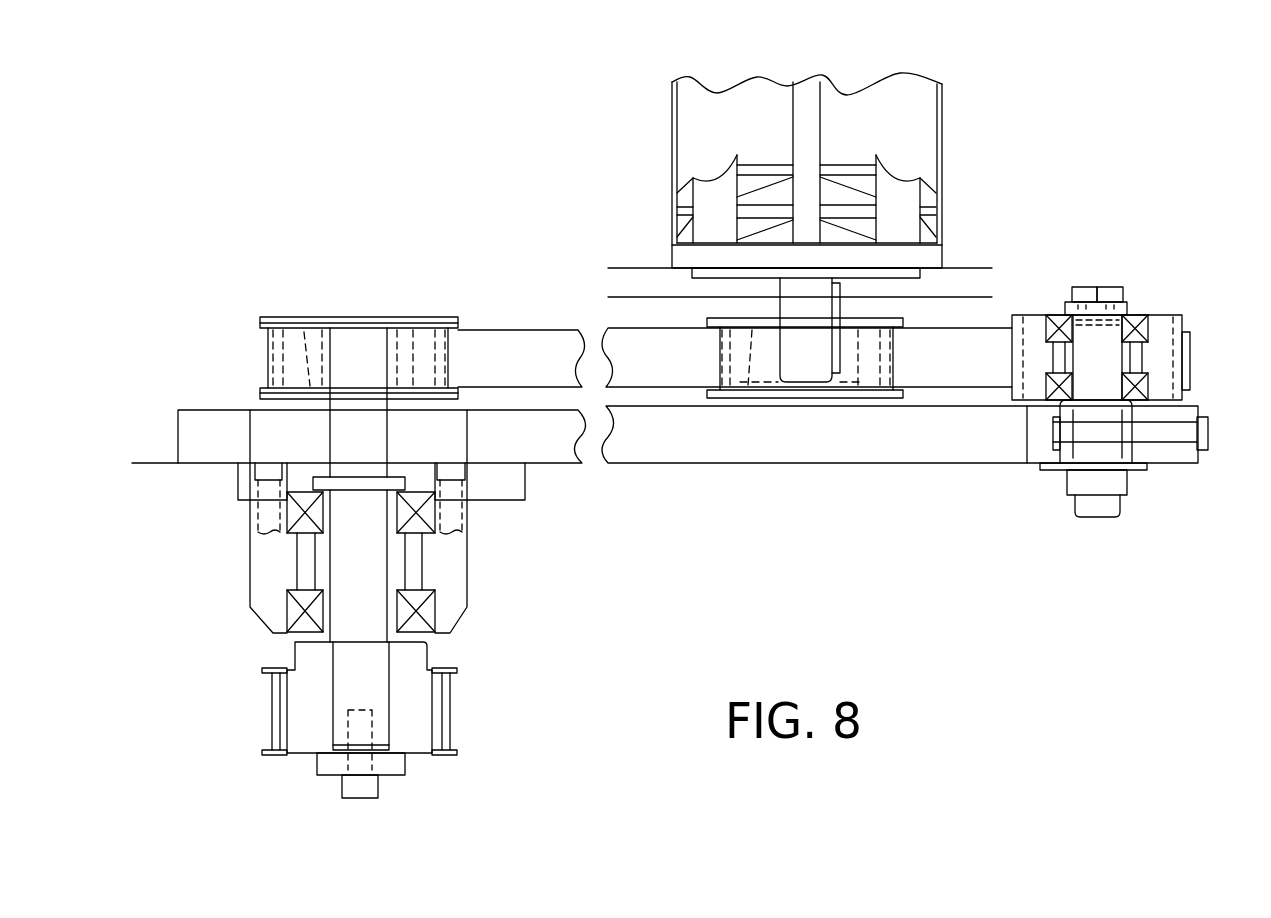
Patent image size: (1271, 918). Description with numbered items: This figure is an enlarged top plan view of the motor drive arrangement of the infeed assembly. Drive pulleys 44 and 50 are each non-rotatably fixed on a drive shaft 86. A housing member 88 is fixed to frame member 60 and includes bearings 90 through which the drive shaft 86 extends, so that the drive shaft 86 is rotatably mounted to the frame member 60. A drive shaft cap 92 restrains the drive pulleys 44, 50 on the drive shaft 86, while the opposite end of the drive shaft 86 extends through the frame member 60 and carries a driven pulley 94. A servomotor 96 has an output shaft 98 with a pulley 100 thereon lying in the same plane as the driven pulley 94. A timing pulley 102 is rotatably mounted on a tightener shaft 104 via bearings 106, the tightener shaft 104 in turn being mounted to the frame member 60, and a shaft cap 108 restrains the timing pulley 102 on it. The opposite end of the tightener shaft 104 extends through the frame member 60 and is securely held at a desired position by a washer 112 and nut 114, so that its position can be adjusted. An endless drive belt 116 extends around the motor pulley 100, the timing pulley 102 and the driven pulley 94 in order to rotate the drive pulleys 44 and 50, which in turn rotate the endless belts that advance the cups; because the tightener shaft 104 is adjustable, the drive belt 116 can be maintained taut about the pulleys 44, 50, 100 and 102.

The drive pulley 44 is at (408, 711).
The drive pulley 50 is at (452, 713).
The frame member 60 is at (205, 452).
The drive shaft 86 is at (347, 672).
The housing member 88 is at (462, 573).
The bearings 90 is at (288, 612).
The drive shaft cap 92 is at (317, 770).
The driven pulley 94 is at (277, 325).
The servomotor 96 is at (942, 152).
The output shaft 98 is at (817, 317).
The pulley 100 is at (720, 366).
The timing pulley 102 is at (1182, 322).
The tightener shaft 104 is at (1102, 372).
The bearings 106 is at (1050, 388).
The shaft cap 108 is at (1065, 305).
The washer 112 is at (1045, 470).
The nut 114 is at (1122, 480).
The endless drive belt 116 is at (947, 367).